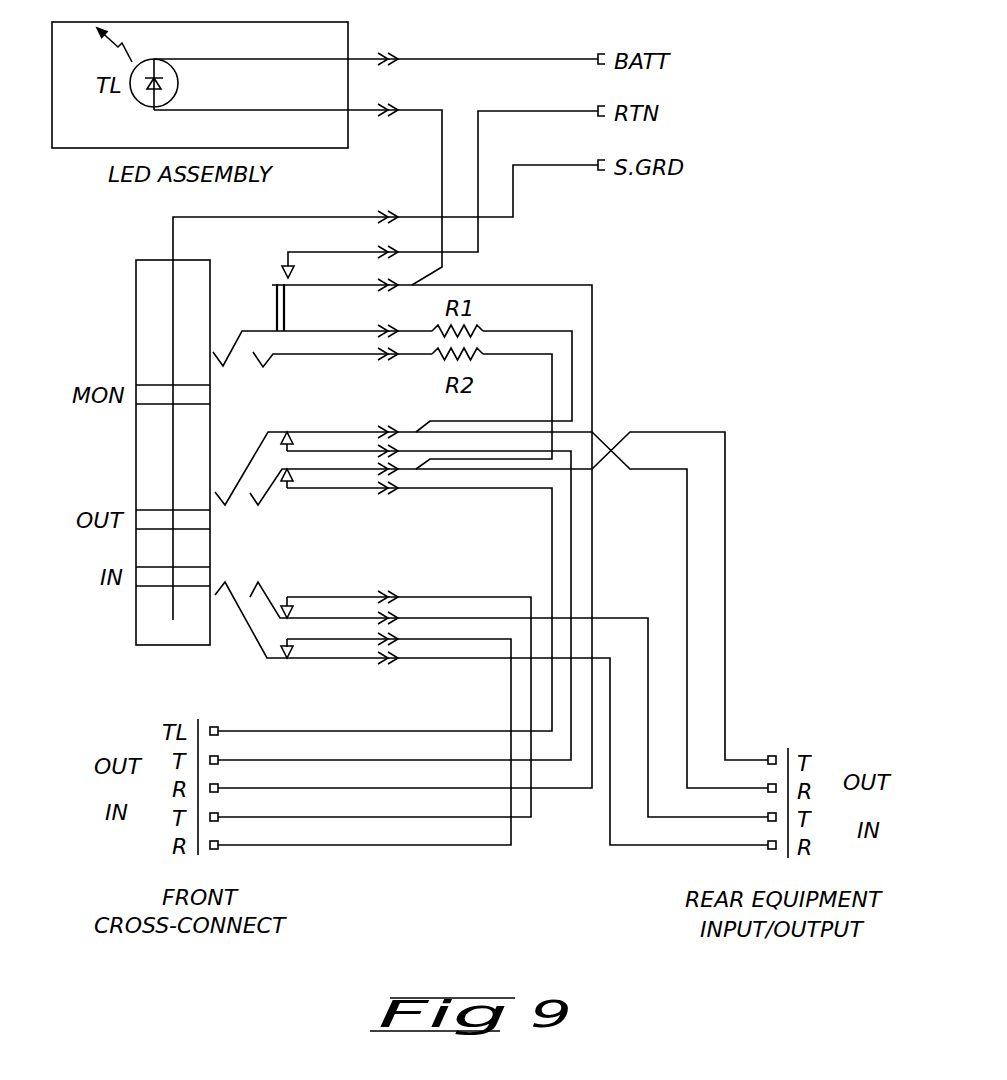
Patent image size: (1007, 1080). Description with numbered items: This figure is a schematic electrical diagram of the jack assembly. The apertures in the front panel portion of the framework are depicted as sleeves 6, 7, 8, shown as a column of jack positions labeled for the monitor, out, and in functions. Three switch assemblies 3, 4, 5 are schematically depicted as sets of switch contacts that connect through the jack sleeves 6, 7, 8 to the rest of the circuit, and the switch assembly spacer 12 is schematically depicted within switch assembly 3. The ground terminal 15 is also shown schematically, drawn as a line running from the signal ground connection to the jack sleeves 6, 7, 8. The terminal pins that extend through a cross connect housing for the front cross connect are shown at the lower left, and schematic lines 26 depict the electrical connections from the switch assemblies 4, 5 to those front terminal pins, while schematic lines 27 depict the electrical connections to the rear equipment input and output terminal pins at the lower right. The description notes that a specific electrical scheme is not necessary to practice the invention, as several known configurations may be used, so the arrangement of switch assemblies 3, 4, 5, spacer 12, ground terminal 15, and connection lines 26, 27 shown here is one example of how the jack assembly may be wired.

The switch assembly 3 is at (362, 328).
The switch assembly 4 is at (348, 488).
The switch assembly 5 is at (348, 658).
The sleeve 6 is at (153, 578).
The sleeve 7 is at (153, 518).
The sleeve 8 is at (153, 395).
The switch assembly spacer 12 is at (275, 308).
The ground terminal 15 is at (322, 217).
The schematic line 26 is at (418, 731).
The schematic line 27 is at (758, 788).